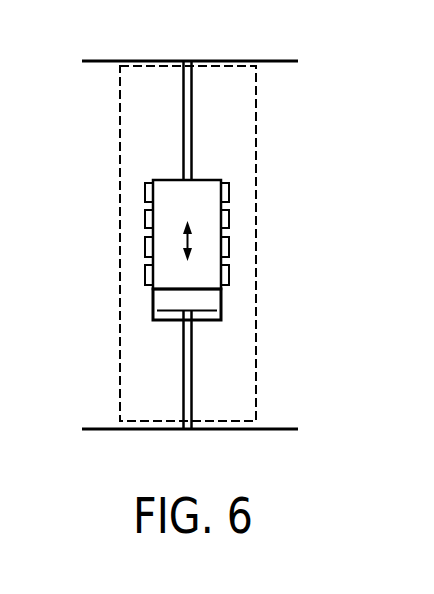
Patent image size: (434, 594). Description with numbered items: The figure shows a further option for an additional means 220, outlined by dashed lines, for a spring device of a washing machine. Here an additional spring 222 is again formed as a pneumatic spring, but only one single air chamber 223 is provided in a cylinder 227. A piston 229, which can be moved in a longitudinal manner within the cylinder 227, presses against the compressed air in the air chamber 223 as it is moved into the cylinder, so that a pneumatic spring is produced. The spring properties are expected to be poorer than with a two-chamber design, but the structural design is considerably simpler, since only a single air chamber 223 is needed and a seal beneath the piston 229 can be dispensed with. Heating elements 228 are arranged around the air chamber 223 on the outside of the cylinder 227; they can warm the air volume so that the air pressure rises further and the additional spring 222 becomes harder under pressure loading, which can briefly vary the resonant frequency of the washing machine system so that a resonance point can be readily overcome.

The additional means 220 is at (255, 98).
The additional spring 222 is at (256, 203).
The air chamber 223 is at (202, 260).
The cylinder 227 is at (221, 317).
The heating elements 228 is at (145, 272).
The piston 229 is at (212, 300).